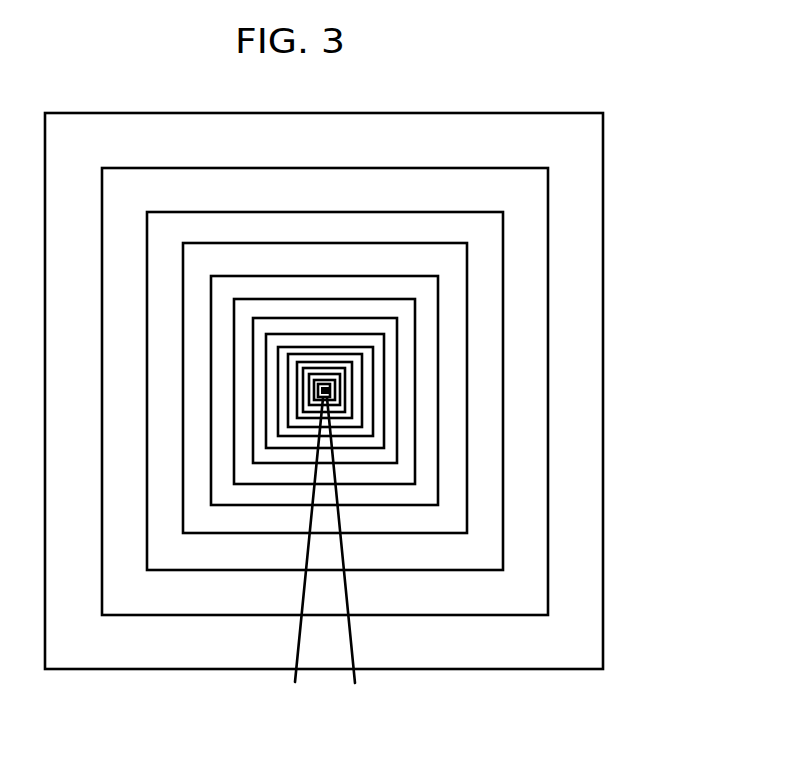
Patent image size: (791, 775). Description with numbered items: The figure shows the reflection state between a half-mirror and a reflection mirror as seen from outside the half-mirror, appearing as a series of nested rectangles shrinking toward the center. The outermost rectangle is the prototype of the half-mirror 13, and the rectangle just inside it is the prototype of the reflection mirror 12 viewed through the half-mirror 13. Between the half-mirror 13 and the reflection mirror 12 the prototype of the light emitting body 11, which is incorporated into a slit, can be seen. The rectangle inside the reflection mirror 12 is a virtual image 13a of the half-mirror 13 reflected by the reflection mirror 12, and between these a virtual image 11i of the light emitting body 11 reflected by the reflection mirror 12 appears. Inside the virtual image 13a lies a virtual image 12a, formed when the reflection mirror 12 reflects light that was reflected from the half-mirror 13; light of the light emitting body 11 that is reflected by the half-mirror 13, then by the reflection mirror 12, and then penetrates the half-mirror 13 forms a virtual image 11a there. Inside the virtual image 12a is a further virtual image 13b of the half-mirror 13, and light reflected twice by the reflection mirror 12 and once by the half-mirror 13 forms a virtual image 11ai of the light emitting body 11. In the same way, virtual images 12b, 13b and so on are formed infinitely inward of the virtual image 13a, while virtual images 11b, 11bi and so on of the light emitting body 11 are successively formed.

The half-mirror 13 is at (603, 172).
The reflection mirror 12 is at (548, 208).
The virtual image of the half-mirror 13a is at (503, 250).
The virtual image of the reflection mirror 12a is at (467, 287).
The second virtual image of the half-mirror 13b is at (438, 322).
The second virtual image of the reflection mirror 12b is at (415, 360).
The light emitting body 11 is at (327, 660).
The virtual image of the light emitting body 11bi is at (322, 474).
The virtual image of the light emitting body 11b is at (323, 493).
The virtual image of the light emitting body 11i is at (333, 590).
The virtual image of the light emitting body 11a is at (330, 552).
The virtual image of the light emitting body 11ai is at (330, 522).